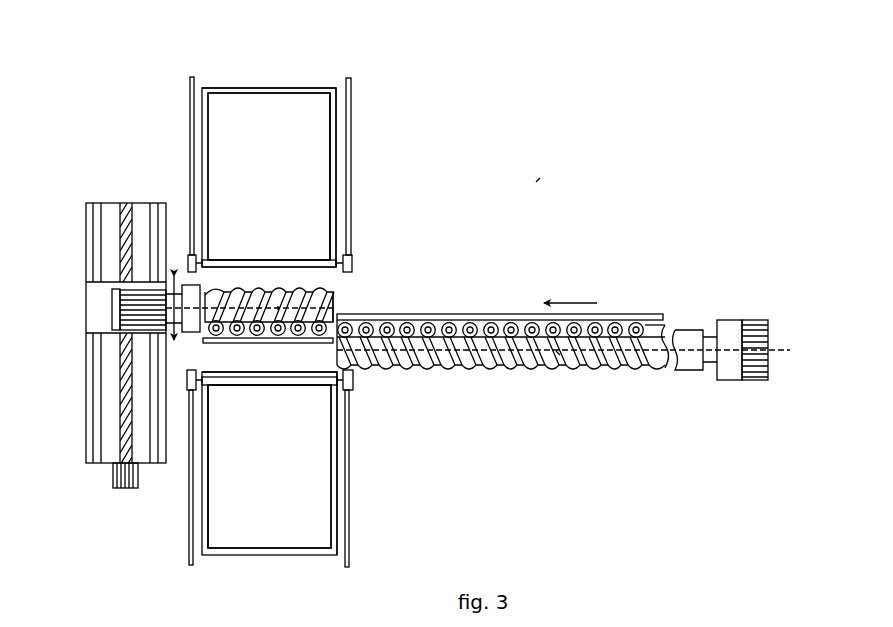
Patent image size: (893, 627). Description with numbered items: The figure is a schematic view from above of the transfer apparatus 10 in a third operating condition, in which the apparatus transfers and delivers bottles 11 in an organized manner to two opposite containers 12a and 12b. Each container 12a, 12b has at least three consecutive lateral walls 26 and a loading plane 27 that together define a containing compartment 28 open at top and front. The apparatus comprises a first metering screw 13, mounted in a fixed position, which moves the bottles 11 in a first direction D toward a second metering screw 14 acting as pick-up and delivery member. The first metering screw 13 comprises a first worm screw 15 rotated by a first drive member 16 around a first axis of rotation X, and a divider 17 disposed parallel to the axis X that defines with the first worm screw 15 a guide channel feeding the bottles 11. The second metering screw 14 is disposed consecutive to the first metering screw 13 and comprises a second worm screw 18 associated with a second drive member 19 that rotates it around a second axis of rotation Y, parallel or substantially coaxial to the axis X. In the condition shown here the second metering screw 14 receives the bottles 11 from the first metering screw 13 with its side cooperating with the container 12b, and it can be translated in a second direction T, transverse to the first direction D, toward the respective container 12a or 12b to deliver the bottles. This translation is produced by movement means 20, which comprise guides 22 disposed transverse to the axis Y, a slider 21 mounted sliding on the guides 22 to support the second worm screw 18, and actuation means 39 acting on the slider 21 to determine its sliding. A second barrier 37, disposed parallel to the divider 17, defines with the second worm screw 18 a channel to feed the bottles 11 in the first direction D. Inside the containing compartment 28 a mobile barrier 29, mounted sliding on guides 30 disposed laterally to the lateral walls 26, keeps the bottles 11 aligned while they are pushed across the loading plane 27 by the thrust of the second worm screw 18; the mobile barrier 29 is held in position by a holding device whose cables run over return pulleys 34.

The transfer apparatus 10 is at (541, 179).
The bottles 11 is at (318, 325).
The container 12a is at (343, 211).
The container 12b is at (340, 446).
The first metering screw 13 is at (628, 381).
The second metering screw 14 is at (340, 300).
The first worm screw 15 is at (558, 353).
The first drive member 16 is at (732, 331).
The divider 17 is at (510, 319).
The second worm screw 18 is at (250, 302).
The second drive member 19 is at (117, 308).
The movement means 20 is at (78, 342).
The slider 21 is at (97, 292).
The guides 22 is at (155, 217).
The lateral walls 26 is at (204, 100).
The loading plane 27 is at (302, 103).
The containing compartment 28 is at (332, 187).
The mobile barrier 29 is at (280, 265).
The guides 30 is at (192, 108).
The return pulleys 34 is at (192, 260).
The second barrier 37 is at (216, 339).
The actuation means 39 is at (122, 482).
The first direction D is at (568, 303).
The second direction T is at (170, 333).
The first axis of rotation X is at (692, 349).
The second axis of rotation Y is at (278, 308).